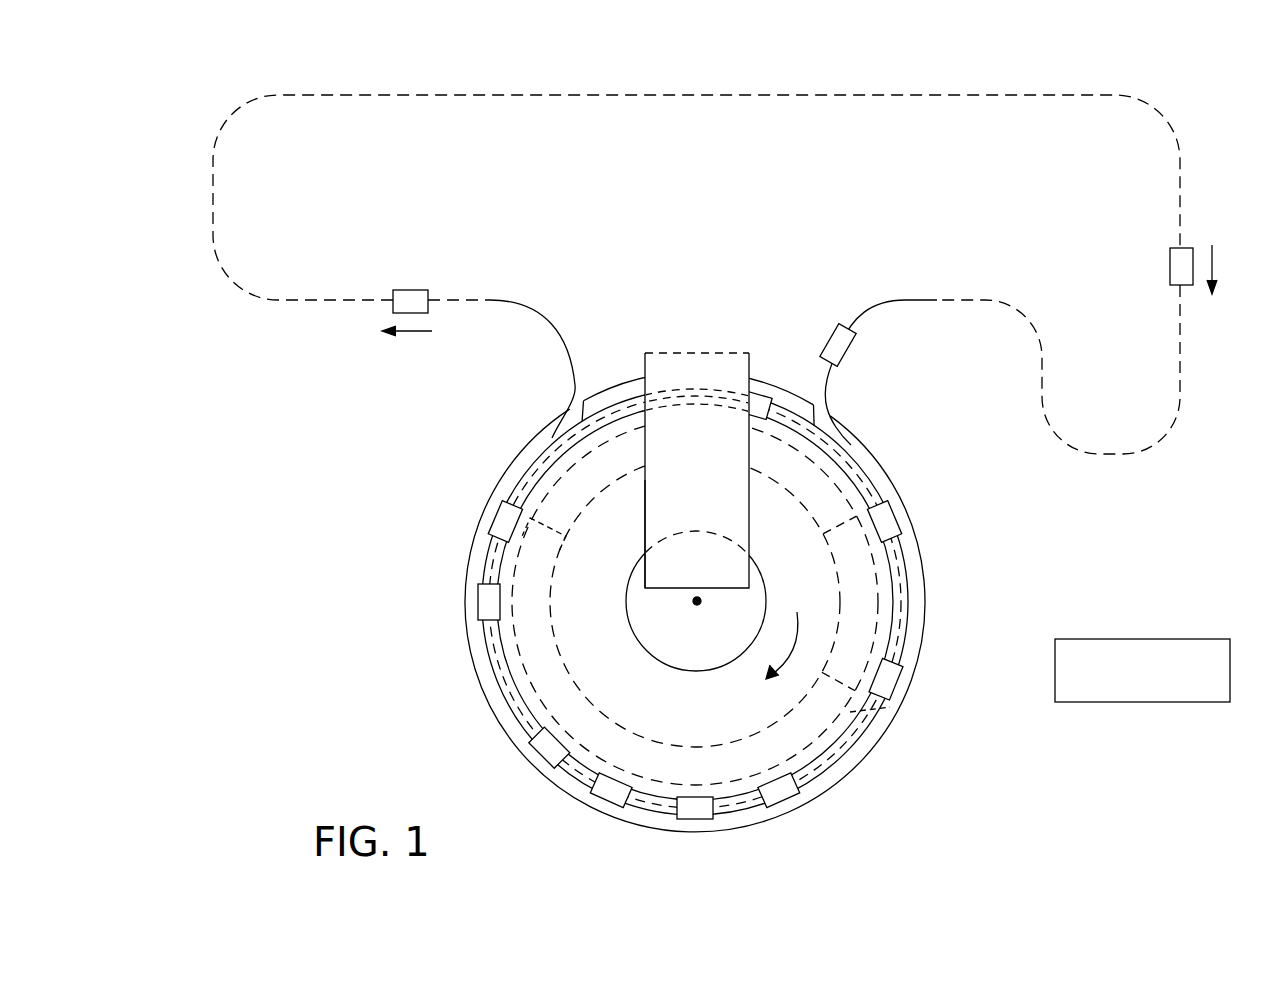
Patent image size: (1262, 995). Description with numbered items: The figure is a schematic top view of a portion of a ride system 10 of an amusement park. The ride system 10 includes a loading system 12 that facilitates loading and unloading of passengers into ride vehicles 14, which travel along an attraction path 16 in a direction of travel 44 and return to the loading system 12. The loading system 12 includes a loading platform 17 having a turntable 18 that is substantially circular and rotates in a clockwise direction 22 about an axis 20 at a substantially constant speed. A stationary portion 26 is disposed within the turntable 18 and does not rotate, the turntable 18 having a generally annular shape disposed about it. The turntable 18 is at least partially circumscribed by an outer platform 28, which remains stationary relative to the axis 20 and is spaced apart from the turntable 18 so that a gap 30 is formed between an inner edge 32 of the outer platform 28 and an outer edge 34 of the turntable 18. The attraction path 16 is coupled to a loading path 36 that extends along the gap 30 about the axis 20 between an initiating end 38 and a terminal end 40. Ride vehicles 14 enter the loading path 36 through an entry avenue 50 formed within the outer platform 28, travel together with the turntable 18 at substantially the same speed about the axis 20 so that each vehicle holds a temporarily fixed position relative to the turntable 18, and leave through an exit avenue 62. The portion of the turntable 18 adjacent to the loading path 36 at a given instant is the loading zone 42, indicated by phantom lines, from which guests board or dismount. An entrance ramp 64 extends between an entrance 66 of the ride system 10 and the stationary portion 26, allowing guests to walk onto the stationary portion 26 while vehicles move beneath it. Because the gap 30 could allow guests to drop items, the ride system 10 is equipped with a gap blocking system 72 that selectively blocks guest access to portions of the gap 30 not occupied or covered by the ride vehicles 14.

The ride system 10 is at (232, 92).
The loading system 12 is at (425, 497).
The ride vehicles 14 is at (415, 290).
The attraction path 16 is at (697, 95).
The loading platform 17 is at (723, 325).
The turntable 18 is at (875, 648).
The axis 20 is at (694, 606).
The clockwise direction 22 is at (780, 640).
The stationary portion 26 is at (634, 608).
The outer platform 28 is at (471, 577).
The gap 30 is at (905, 553).
The inner edge 32 is at (908, 570).
The outer edge 34 is at (868, 570).
The loading path 36 is at (520, 490).
The initiating end 38 is at (835, 462).
The terminal end 40 is at (563, 440).
The loading zone 42 is at (890, 707).
The direction of travel 44 is at (413, 334).
The entry avenue 50 is at (830, 406).
The exit avenue 62 is at (574, 390).
The entrance ramp 64 is at (648, 488).
The entrance 66 is at (700, 352).
The gap blocking system 72 is at (1140, 639).